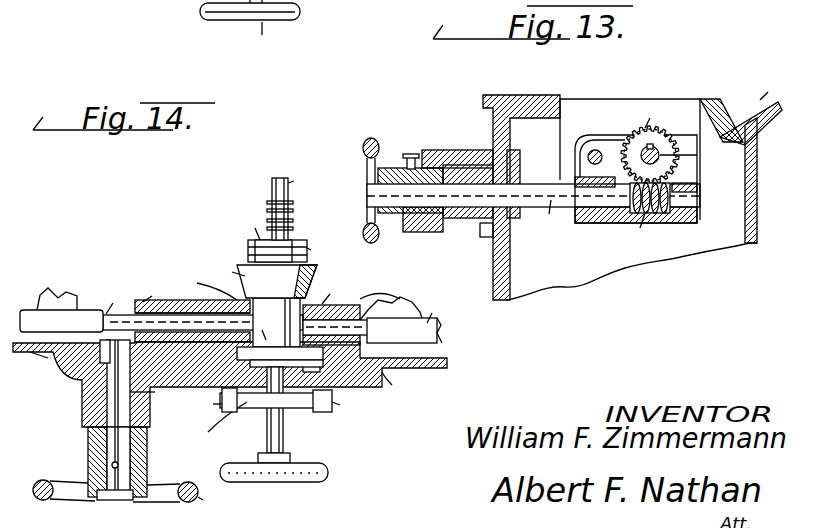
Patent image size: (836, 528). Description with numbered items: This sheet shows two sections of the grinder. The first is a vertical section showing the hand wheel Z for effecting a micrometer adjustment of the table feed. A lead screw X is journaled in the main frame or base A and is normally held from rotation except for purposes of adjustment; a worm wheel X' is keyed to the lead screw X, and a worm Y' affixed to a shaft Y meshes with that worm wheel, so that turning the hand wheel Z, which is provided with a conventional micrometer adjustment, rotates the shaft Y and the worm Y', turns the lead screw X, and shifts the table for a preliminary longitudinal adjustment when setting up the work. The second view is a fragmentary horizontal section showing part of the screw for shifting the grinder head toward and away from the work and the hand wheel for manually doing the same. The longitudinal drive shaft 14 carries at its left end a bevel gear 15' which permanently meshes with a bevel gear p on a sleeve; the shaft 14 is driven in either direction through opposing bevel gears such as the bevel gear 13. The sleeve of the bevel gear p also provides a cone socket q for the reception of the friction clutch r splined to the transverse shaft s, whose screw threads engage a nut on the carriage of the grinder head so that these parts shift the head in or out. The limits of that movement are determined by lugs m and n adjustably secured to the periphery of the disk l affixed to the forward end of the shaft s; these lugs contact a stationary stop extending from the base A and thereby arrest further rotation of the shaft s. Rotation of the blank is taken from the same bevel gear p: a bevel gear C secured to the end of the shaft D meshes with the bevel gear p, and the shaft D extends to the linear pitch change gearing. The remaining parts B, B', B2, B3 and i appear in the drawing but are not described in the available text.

In FIG. 13, the hand wheel Z is at (289, 121).
In FIG. 13, the bevel gear 13 is at (264, 38).
In FIG. 13, the shaft Y is at (533, 209).
In FIG. 13, the lead screw X is at (667, 155).
In FIG. 13, the worm wheel X' is at (647, 113).
In FIG. 13, the worm Y' is at (650, 216).
In FIG. 13, the base A is at (741, 159).
In FIG. 14, the base A is at (391, 388).
In FIG. 14, the base plate B' is at (230, 384).
In FIG. 14, the shaft D is at (161, 308).
In FIG. 14, the bearing B is at (192, 309).
In FIG. 14, the bevel gear C is at (192, 291).
In FIG. 14, the bevel gear p is at (280, 332).
In FIG. 14, the cone socket q is at (267, 280).
In FIG. 14, the friction clutch r is at (276, 236).
In FIG. 14, the lock nut i is at (311, 245).
In FIG. 14, the transverse shaft s is at (285, 207).
In FIG. 14, the bevel gear 15' is at (331, 311).
In FIG. 14, the longitudinal drive shaft 14 is at (375, 320).
In FIG. 14, the column B2 is at (132, 420).
In FIG. 14, the handle B3 is at (128, 497).
In FIG. 14, the disk l is at (264, 421).
In FIG. 14, the lug m is at (216, 401).
In FIG. 14, the lug n is at (330, 406).